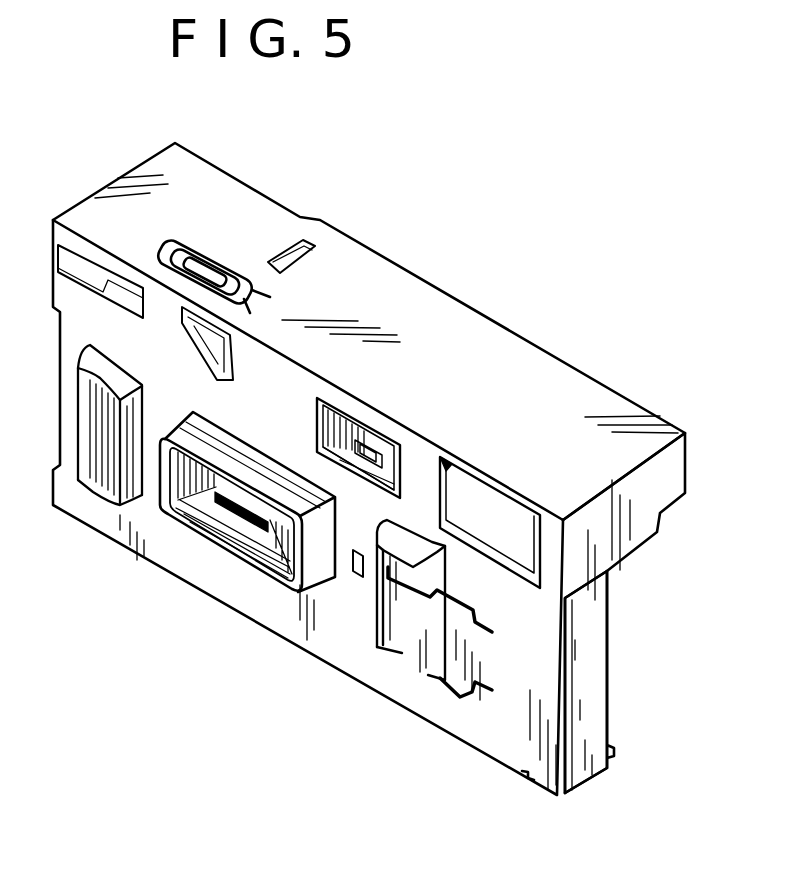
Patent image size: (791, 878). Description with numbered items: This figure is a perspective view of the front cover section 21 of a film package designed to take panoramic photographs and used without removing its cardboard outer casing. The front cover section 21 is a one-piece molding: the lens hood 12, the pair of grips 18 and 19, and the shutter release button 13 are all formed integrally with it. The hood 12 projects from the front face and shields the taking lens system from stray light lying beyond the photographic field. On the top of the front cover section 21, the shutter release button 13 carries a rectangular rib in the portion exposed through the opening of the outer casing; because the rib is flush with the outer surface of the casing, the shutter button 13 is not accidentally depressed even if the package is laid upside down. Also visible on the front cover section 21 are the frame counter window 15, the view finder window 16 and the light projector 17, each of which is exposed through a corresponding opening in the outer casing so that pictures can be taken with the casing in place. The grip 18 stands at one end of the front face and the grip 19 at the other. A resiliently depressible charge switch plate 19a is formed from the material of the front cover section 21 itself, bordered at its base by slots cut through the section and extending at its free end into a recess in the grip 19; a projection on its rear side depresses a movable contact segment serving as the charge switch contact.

The lens hood 12 is at (257, 465).
The shutter release button 13 is at (222, 253).
The frame counter window 15 is at (303, 253).
The view finder window 16 is at (382, 440).
The light projector 17 is at (508, 487).
The grip 18 is at (98, 476).
The grip 19 is at (375, 598).
The charge switch plate 19a is at (410, 653).
The front cover section 21 is at (598, 650).